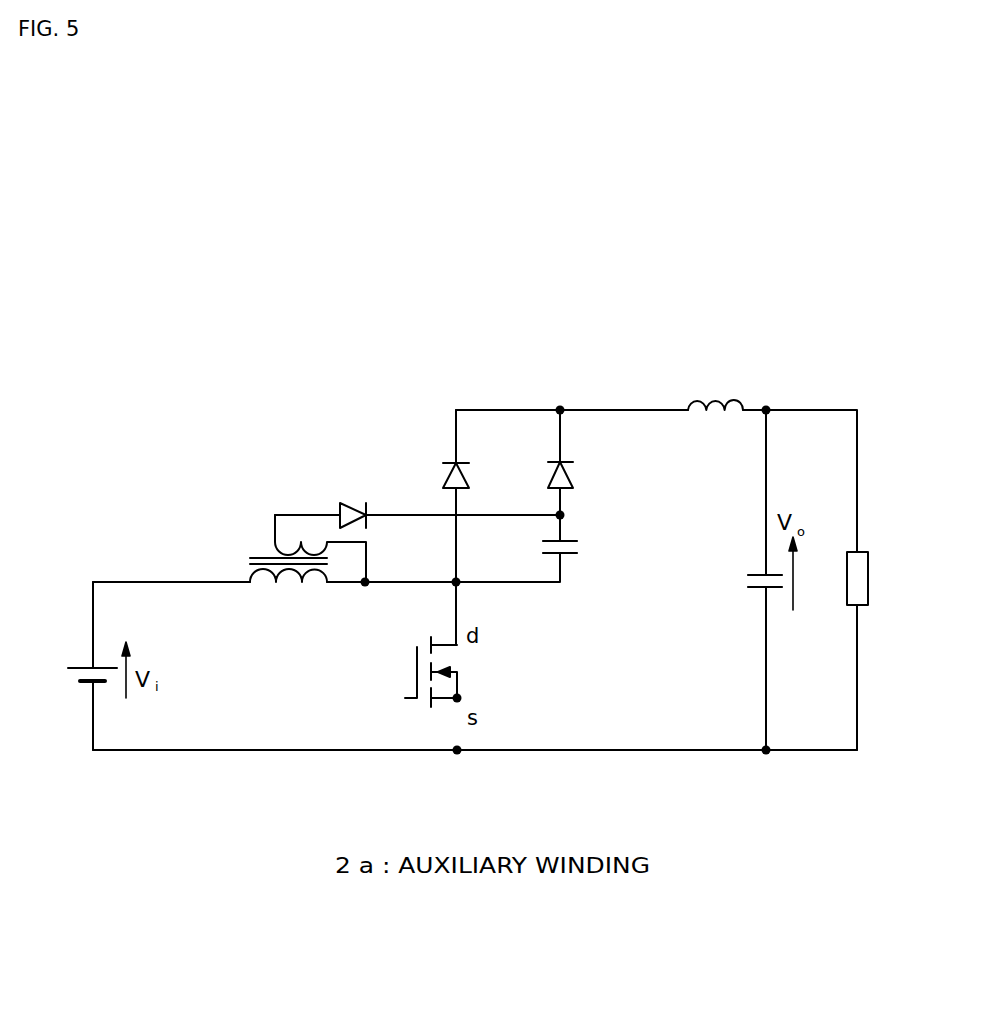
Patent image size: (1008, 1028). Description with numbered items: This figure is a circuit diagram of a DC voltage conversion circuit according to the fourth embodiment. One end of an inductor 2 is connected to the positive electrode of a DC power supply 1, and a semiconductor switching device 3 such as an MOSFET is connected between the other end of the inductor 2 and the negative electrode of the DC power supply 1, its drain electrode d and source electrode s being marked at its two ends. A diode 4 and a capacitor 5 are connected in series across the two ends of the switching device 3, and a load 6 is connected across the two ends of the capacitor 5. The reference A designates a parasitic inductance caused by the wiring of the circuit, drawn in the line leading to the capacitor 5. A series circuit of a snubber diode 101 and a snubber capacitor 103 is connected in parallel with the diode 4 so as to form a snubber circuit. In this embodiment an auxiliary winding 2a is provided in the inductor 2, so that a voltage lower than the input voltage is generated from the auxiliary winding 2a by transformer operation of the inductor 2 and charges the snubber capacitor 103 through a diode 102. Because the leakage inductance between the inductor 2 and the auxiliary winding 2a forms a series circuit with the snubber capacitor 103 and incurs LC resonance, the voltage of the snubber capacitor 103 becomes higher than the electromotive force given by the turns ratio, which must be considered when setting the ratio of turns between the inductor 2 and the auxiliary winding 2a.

The DC power supply 1 is at (85, 655).
The inductor 2 is at (243, 572).
The auxiliary winding 2a is at (268, 542).
The semiconductor switching device 3 is at (440, 633).
The diode 4 is at (445, 453).
The capacitor 5 is at (753, 562).
The load 6 is at (865, 557).
The snubber diode 101 is at (565, 457).
The diode 102 is at (358, 498).
The snubber capacitor 103 is at (567, 562).
The parasitic inductance A is at (713, 388).